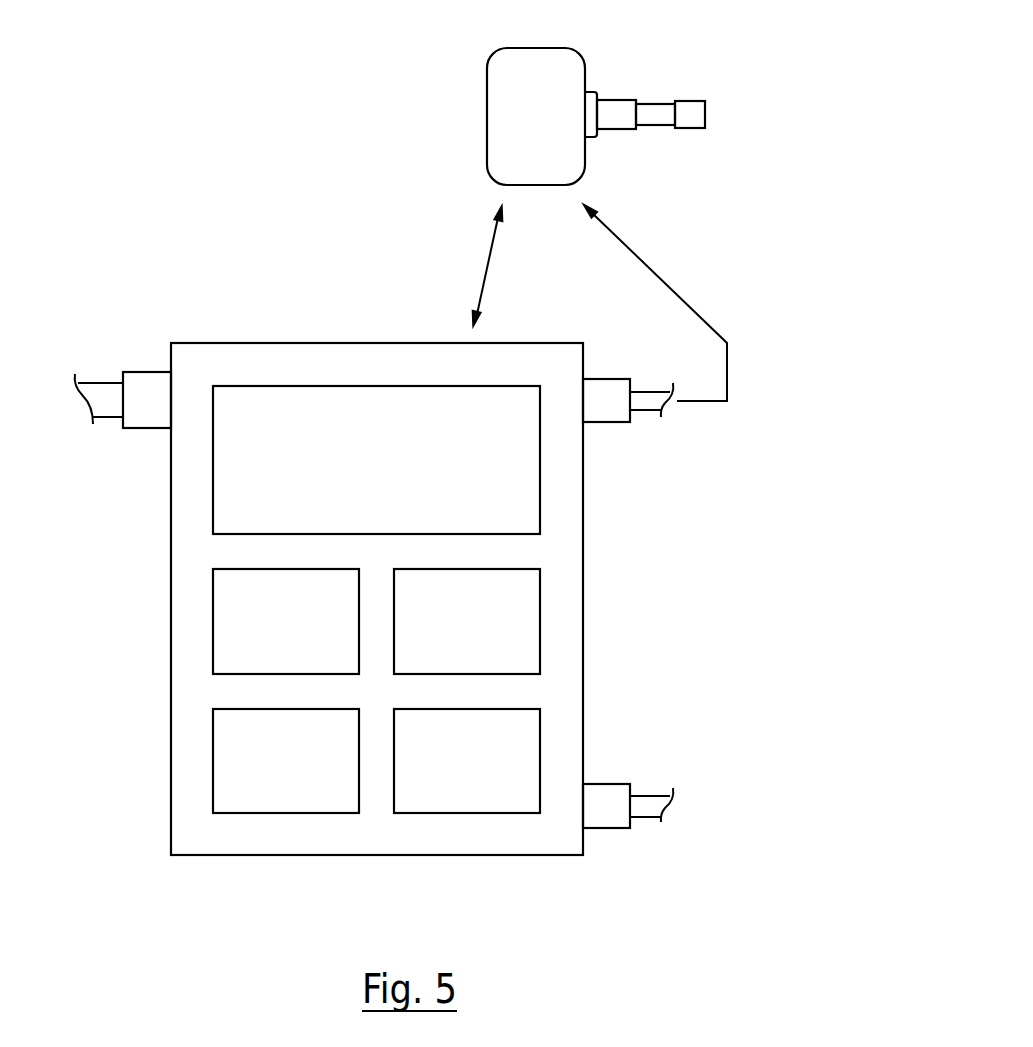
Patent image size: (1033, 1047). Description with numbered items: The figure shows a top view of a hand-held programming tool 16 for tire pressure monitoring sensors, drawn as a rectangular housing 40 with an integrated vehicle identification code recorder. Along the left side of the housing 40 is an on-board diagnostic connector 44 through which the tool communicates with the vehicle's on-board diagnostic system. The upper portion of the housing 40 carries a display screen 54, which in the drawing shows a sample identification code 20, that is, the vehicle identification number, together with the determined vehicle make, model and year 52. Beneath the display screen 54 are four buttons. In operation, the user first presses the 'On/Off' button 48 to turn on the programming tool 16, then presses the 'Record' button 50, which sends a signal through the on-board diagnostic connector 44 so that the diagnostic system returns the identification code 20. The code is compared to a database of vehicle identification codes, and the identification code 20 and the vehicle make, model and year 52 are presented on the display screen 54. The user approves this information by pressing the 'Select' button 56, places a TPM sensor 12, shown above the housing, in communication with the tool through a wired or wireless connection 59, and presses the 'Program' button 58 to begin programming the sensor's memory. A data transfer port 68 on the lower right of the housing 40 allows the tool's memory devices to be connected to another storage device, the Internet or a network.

The tire pressure monitoring (TPM) sensor 12 is at (487, 118).
The programming tool 16 is at (224, 343).
The identification code 20 is at (524, 442).
The housing 40 is at (583, 688).
The on-board diagnostic connector 44 is at (148, 372).
The 'On/Off' button 48 is at (530, 759).
The 'Record' button 50 is at (217, 618).
The vehicle make, model and year 52 is at (524, 479).
The display screen 54 is at (307, 360).
The 'Select' button 56 is at (530, 620).
The 'Program' button 58 is at (217, 762).
The wired or wireless connection 59 is at (487, 269).
The data transfer port 68 is at (613, 829).